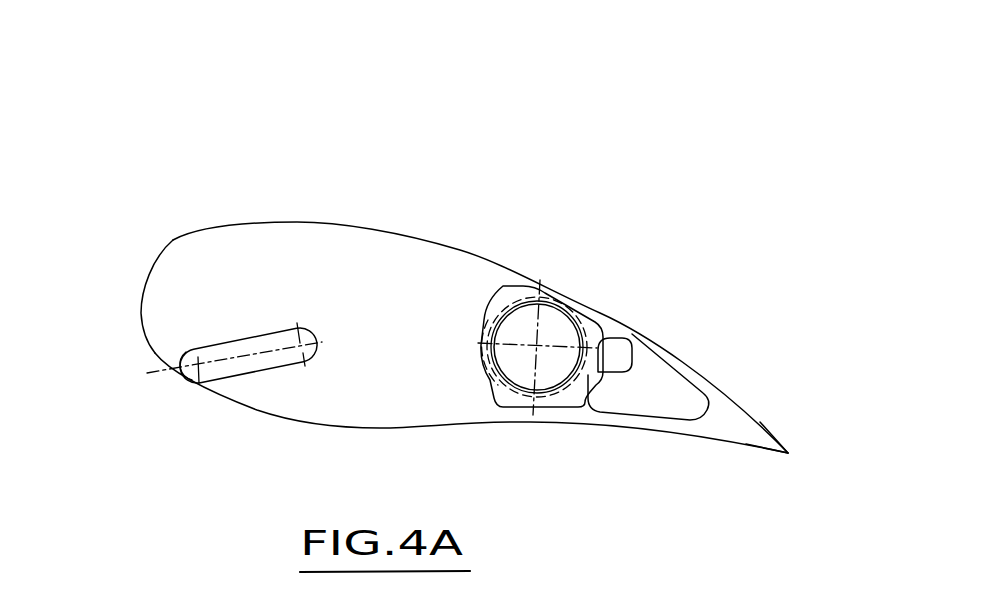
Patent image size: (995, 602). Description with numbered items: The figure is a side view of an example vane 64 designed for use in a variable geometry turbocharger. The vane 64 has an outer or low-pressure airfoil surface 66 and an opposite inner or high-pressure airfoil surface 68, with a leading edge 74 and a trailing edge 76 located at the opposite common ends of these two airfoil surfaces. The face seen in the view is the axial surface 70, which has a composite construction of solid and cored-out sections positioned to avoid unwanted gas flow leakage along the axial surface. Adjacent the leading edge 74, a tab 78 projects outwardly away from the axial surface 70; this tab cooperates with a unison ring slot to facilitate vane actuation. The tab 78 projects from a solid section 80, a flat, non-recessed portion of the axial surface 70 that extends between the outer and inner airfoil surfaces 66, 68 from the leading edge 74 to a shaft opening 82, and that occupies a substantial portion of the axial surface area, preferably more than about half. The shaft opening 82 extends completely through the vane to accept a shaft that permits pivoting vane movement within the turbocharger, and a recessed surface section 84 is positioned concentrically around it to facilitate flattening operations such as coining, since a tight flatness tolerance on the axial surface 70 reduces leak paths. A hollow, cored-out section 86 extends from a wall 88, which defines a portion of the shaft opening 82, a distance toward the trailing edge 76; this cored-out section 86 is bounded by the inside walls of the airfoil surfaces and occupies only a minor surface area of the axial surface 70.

The vane 64 is at (471, 257).
The outer or low-pressure airfoil surface 66 is at (349, 223).
The inner or high-pressure airfoil surface 68 is at (433, 429).
The axial surface 70 is at (377, 396).
The leading edge 74 is at (138, 306).
The trailing edge 76 is at (790, 454).
The tab 78 is at (240, 362).
The solid section 80 is at (363, 322).
The shaft opening 82 is at (553, 328).
The recessed surface section 84 is at (565, 400).
The cored-out section 86 is at (657, 384).
The wall 88 is at (600, 372).